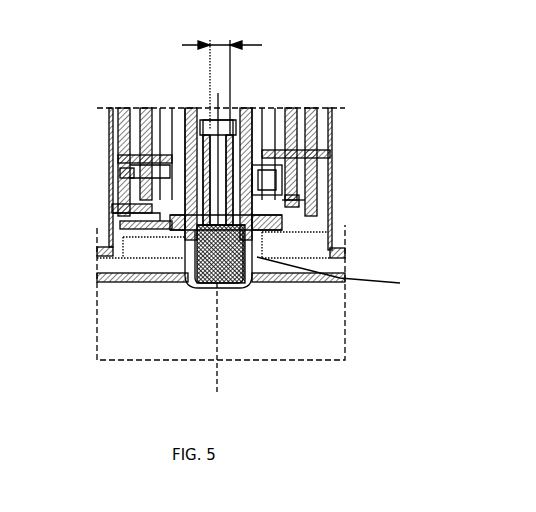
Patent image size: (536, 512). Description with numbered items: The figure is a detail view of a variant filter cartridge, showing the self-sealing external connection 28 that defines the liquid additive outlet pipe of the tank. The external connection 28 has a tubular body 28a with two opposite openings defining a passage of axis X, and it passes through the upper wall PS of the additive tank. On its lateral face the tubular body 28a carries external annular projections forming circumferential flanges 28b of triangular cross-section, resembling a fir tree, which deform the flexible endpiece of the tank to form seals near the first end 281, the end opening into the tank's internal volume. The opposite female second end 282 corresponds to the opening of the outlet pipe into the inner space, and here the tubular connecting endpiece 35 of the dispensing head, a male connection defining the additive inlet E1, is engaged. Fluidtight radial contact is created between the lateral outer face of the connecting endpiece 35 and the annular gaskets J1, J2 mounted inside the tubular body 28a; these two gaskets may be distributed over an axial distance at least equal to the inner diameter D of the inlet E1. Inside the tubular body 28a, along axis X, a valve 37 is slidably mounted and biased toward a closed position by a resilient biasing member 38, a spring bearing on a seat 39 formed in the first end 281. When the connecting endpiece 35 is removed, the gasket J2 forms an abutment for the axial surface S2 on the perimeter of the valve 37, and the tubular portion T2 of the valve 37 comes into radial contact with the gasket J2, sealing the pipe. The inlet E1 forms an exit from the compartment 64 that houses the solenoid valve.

The external connection 28 is at (250, 293).
The first end 281 is at (188, 285).
The second end 282 is at (170, 150).
The tubular body 28a is at (270, 197).
The circumferential flanges 28b is at (297, 228).
The connecting endpiece 35 is at (138, 157).
The valve 37 is at (337, 275).
The resilient biasing member 38 is at (215, 284).
The seat 39 is at (208, 284).
The compartment 64 is at (310, 140).
The additive inlet E1 is at (190, 135).
The annular gasket J1 is at (270, 140).
The annular gasket J2 is at (130, 173).
The axial surface S2 is at (300, 203).
The tubular portion T2 is at (113, 210).
The upper wall PS is at (140, 280).
The inner diameter D is at (222, 80).
The axis X is at (225, 372).